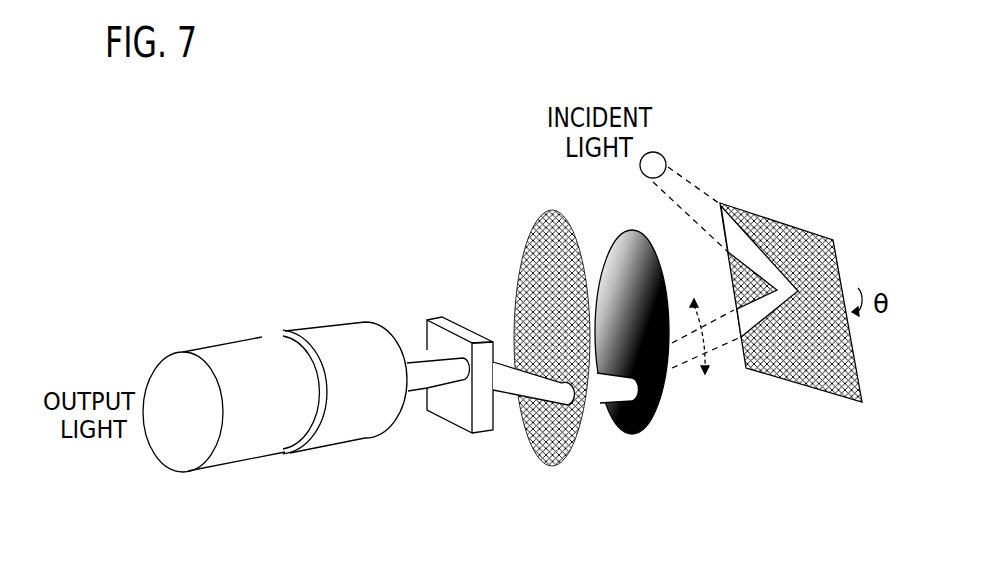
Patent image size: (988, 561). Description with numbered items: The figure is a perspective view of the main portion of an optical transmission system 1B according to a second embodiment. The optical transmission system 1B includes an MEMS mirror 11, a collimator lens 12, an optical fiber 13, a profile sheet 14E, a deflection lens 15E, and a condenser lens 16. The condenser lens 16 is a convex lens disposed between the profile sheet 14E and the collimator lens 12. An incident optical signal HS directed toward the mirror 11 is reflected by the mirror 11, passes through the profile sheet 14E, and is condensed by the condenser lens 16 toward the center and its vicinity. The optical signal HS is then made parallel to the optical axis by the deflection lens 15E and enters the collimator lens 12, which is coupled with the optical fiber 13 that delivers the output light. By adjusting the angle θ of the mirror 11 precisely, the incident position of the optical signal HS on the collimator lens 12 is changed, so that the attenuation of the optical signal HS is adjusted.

The optical transmission system 1B is at (358, 193).
The MEMS mirror 11 is at (803, 386).
The collimator lens 12 is at (357, 442).
The optical fiber 13 is at (250, 458).
The profile sheet 14E is at (632, 434).
The deflection lens 15E is at (455, 430).
The condenser lens 16 is at (552, 458).
The optical signal HS is at (690, 190).